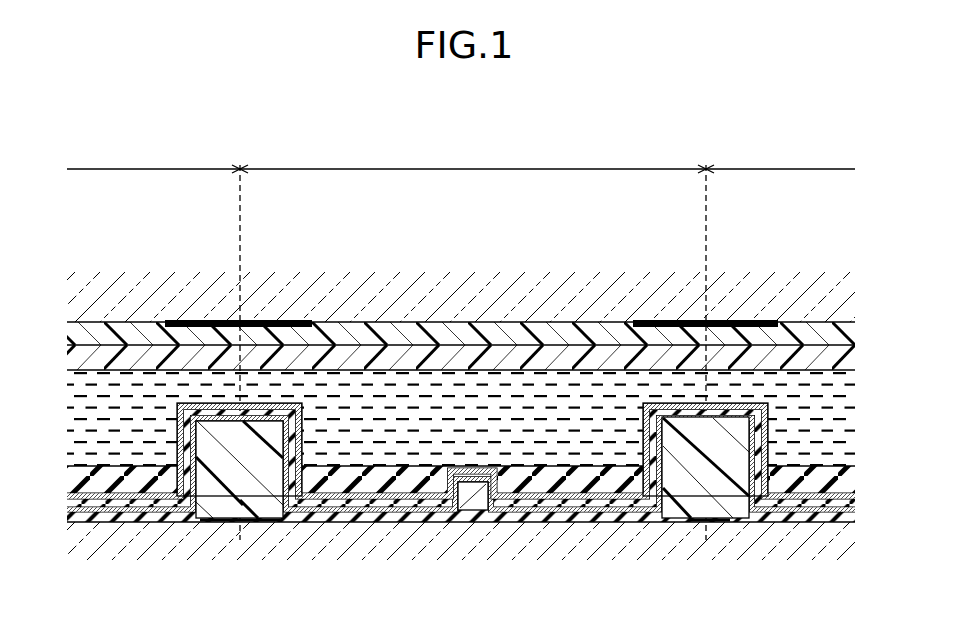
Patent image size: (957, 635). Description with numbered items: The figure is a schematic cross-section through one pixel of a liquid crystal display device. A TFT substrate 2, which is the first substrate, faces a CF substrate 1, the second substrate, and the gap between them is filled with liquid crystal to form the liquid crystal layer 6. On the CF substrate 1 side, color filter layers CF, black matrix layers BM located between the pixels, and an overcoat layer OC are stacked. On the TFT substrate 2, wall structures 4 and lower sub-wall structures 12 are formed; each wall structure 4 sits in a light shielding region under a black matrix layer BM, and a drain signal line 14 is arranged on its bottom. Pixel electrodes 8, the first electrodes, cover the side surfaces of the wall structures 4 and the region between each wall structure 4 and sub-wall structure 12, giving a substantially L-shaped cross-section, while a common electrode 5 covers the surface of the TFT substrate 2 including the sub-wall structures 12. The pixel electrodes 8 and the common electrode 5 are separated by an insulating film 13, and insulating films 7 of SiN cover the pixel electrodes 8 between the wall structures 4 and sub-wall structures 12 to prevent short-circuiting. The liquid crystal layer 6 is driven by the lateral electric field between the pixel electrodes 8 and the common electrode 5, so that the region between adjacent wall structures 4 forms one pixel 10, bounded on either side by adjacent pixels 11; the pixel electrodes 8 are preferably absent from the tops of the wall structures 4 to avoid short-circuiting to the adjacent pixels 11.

The CF substrate 1 is at (147, 300).
The TFT substrate 2 is at (136, 540).
The wall structure 4 is at (268, 492).
The common electrode 5 is at (343, 514).
The liquid crystal layer 6 is at (109, 434).
The insulating film 7 is at (584, 482).
The pixel electrode 8 is at (305, 424).
The pixel 10 is at (473, 340).
The adjacent pixel 11 is at (461, 156).
The sub-wall structure 12 is at (473, 497).
The insulating film 13 is at (402, 498).
The drain signal line 14 is at (232, 522).
The black matrix layer BM is at (275, 318).
The color filter layer CF is at (462, 340).
The overcoat layer OC is at (597, 355).